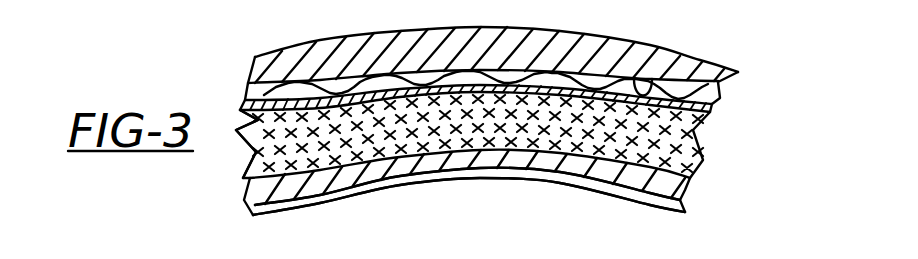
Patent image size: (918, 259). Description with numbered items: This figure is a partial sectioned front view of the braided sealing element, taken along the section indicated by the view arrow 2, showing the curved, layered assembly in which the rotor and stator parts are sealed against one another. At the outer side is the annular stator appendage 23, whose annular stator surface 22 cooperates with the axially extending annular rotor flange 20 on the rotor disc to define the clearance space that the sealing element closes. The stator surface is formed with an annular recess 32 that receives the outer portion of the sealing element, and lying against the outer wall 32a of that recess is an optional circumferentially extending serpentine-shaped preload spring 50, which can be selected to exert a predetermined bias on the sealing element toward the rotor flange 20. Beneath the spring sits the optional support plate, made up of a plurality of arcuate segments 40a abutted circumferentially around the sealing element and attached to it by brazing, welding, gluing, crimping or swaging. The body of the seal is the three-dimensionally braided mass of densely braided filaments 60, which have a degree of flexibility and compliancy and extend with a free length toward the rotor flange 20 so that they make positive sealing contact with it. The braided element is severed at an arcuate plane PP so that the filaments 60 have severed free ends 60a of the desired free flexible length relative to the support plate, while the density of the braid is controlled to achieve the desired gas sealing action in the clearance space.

The annular rotor flange 20 is at (550, 172).
The annular stator portion or surface 22 is at (247, 165).
The annular stator appendage 23 is at (583, 57).
The annular recess 32 is at (710, 117).
The outer wall of the recess 32a is at (648, 90).
The arcuate segments 40a is at (257, 108).
The serpentine-shaped spring 50 is at (302, 90).
The braided filaments 60 is at (436, 158).
The free ends 60a is at (303, 172).
The plane PP is at (387, 159).
The section line of FIG. 2 is at (478, 197).